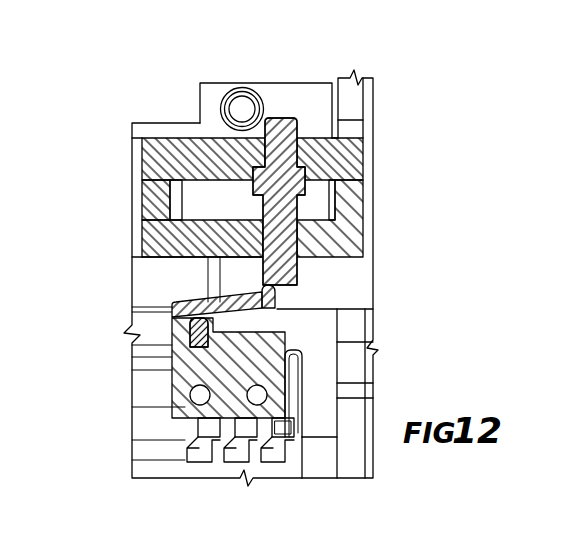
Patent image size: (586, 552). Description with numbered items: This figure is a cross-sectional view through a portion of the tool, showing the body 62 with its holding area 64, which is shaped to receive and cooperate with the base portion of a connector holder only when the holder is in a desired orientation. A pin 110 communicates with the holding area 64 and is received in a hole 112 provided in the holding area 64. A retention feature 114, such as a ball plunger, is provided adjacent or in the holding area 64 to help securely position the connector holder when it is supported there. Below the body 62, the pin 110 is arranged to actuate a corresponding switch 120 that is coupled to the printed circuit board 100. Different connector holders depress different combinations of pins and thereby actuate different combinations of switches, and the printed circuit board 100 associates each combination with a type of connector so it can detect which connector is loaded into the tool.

The body 62 is at (141, 158).
The holding area 64 is at (213, 138).
The printed circuit board 100 is at (172, 398).
The pin 110 is at (277, 118).
The hole 112 is at (293, 155).
The retention feature 114 is at (243, 90).
The switch 120 is at (186, 333).